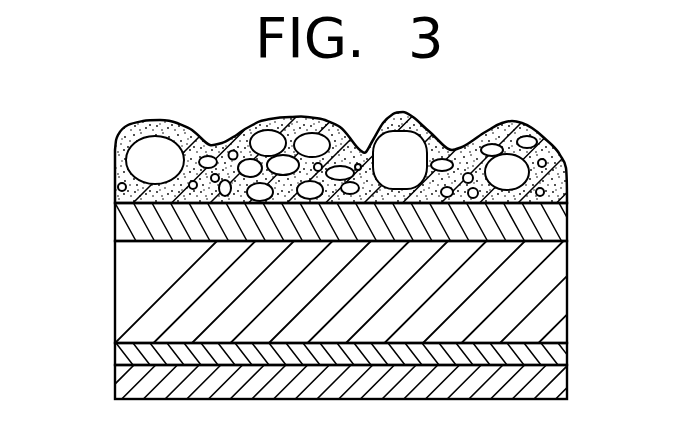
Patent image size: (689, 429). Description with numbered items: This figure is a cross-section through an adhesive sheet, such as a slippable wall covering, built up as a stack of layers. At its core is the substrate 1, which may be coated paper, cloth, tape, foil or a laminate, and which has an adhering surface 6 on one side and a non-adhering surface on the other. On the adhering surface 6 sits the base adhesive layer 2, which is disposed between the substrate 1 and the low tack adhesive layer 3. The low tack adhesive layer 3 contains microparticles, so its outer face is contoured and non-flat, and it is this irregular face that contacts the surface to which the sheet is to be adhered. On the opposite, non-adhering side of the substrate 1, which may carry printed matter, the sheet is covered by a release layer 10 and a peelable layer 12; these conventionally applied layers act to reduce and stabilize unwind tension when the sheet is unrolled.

The substrate 1 is at (552, 290).
The base adhesive layer 2 is at (123, 223).
The low tack adhesive layer 3 is at (566, 175).
The adhering surface 6 is at (146, 121).
The release layer 10 is at (118, 354).
The peelable layer 12 is at (563, 383).